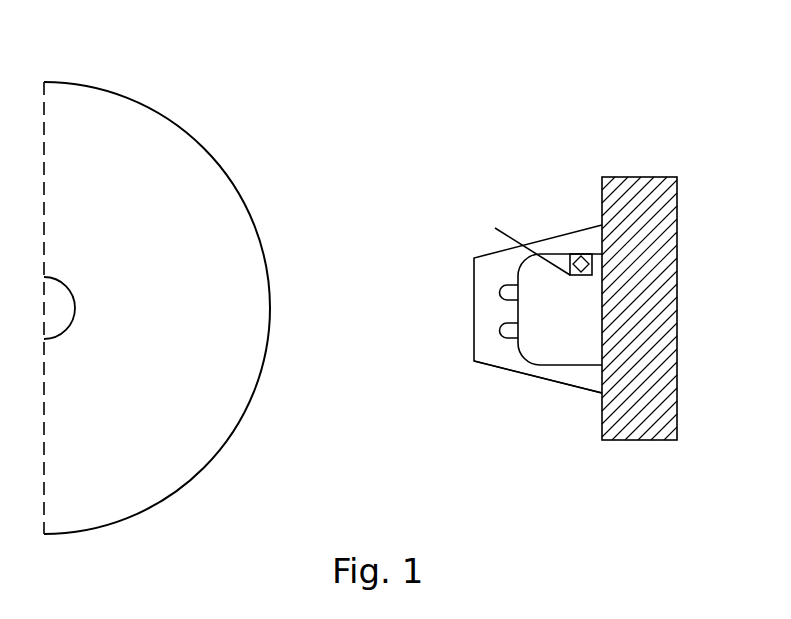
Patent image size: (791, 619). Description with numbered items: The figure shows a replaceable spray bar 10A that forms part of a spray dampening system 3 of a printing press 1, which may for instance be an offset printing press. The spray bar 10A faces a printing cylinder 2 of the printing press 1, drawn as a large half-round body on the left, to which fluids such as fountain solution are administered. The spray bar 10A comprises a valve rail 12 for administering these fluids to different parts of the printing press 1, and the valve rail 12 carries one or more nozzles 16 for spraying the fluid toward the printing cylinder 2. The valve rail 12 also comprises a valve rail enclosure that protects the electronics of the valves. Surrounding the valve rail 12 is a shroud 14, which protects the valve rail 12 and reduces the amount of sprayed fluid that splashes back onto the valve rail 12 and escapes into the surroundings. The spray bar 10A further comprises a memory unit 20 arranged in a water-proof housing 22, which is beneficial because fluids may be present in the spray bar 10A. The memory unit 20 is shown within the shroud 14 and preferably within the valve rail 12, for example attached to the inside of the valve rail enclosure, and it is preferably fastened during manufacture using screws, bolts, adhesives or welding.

The printing press 1 is at (429, 62).
The printing cylinder 2 is at (172, 495).
The spray dampening system 3 is at (596, 147).
The replaceable spray bar 10A is at (527, 214).
The valve rail 12 is at (577, 365).
The shroud 14 is at (537, 377).
The nozzles 16 is at (512, 338).
The memory unit 20 is at (582, 254).
The water-proof housing 22 is at (518, 241).